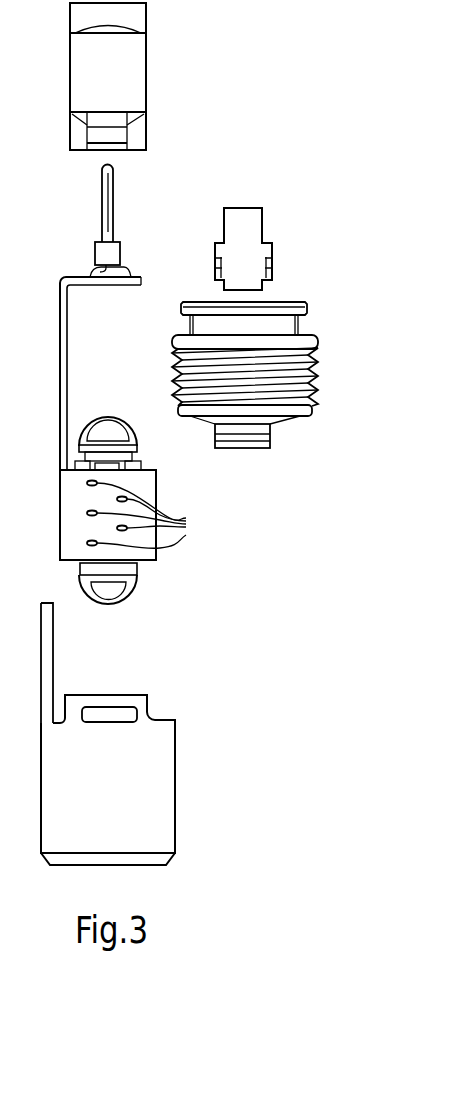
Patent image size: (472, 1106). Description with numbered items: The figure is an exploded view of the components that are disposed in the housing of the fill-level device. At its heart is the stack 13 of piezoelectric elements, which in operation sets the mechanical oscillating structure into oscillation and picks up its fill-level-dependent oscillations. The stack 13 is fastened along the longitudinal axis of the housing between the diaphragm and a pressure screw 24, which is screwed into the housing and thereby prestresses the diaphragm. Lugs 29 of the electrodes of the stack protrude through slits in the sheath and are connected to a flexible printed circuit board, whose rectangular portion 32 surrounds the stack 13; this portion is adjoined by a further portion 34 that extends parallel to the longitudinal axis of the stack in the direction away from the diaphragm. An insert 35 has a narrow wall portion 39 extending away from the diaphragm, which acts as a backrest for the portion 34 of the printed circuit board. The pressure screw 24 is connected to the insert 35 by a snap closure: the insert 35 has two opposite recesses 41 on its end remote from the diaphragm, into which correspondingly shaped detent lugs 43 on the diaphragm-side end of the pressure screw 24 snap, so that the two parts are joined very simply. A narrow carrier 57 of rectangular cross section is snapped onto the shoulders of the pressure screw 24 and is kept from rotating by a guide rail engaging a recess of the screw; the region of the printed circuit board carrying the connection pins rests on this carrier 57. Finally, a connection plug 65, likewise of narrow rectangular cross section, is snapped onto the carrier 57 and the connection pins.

The connection plug 65 is at (126, 94).
The carrier 57 is at (250, 235).
The further portion of the flexible printed circuit board 34 is at (64, 379).
The stack 13 is at (116, 403).
The pressure screw 24 is at (318, 366).
The detent lugs 43 is at (248, 446).
The rectangular portion of the flexible printed circuit board 32 is at (75, 519).
The lugs 29 is at (150, 515).
The narrow wall portion 39 is at (44, 647).
The recesses 41 is at (118, 716).
The insert 35 is at (165, 775).